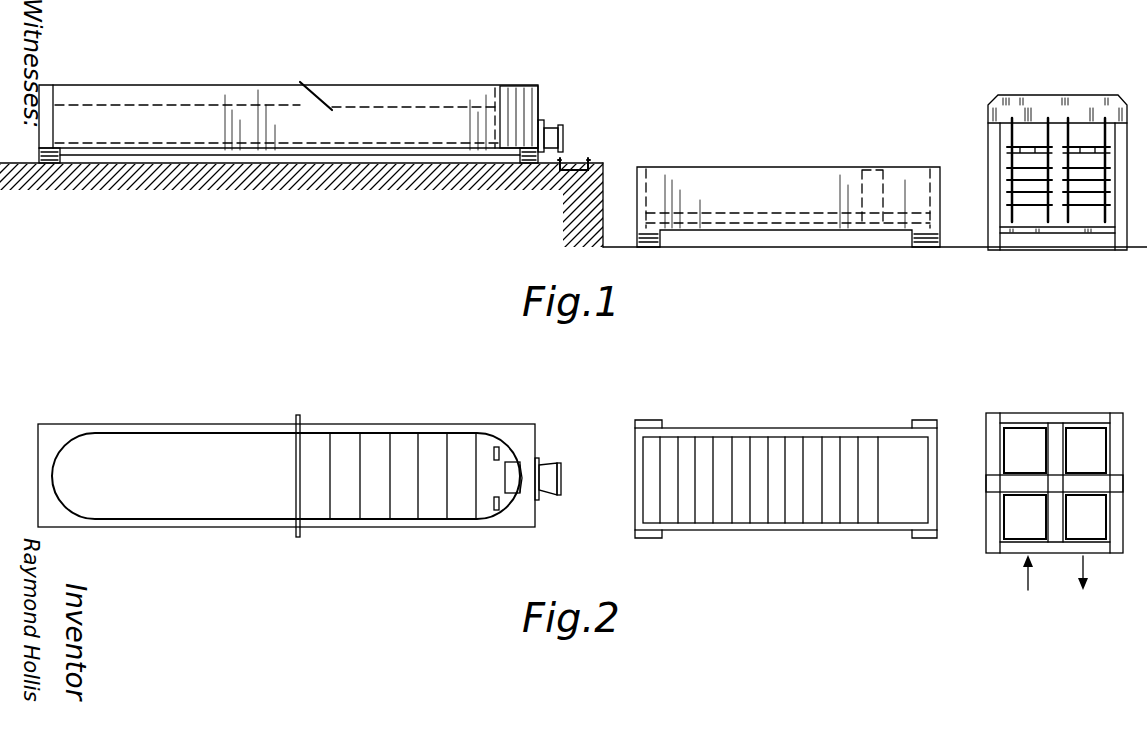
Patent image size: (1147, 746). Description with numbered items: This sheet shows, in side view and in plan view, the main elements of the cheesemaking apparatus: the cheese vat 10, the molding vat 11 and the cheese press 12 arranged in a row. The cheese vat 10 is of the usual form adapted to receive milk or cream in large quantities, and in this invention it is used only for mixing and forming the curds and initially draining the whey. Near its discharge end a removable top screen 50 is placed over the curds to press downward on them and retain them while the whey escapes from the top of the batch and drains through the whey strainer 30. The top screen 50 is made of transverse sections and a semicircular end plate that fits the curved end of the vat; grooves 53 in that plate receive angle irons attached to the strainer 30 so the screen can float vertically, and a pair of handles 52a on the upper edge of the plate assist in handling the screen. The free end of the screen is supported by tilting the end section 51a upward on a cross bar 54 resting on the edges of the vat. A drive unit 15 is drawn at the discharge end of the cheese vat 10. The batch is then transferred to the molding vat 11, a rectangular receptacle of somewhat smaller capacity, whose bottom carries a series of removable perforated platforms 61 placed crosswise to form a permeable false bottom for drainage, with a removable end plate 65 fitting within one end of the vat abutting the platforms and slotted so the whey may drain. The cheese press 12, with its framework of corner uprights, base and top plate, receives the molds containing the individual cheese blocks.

In FIG. 1, the cheese vat 10 is at (114, 86).
In FIG. 2, the cheese vat 10 is at (133, 423).
In FIG. 1, the molding vat 11 is at (781, 166).
In FIG. 2, the molding vat 11 is at (779, 432).
In FIG. 1, the cheese press 12 is at (987, 135).
In FIG. 2, the cheese press 12 is at (1059, 413).
In FIG. 1, the motor 15 is at (561, 125).
In FIG. 2, the motor 15 is at (560, 496).
In FIG. 1, the whey strainer 30 is at (513, 85).
In FIG. 2, the whey strainer 30 is at (522, 462).
In FIG. 1, the top screen 50 is at (432, 110).
In FIG. 2, the top screen 50 is at (403, 455).
In FIG. 1, the end section 51a is at (316, 85).
In FIG. 2, the end section 51a is at (312, 440).
In FIG. 2, the handles 52a is at (496, 447).
In FIG. 2, the grooves 53 is at (513, 480).
In FIG. 1, the cross bar 54 is at (300, 82).
In FIG. 2, the cross bar 54 is at (296, 420).
In FIG. 2, the removable platforms 61 is at (778, 517).
In FIG. 2, the removable end plate 65 is at (858, 517).